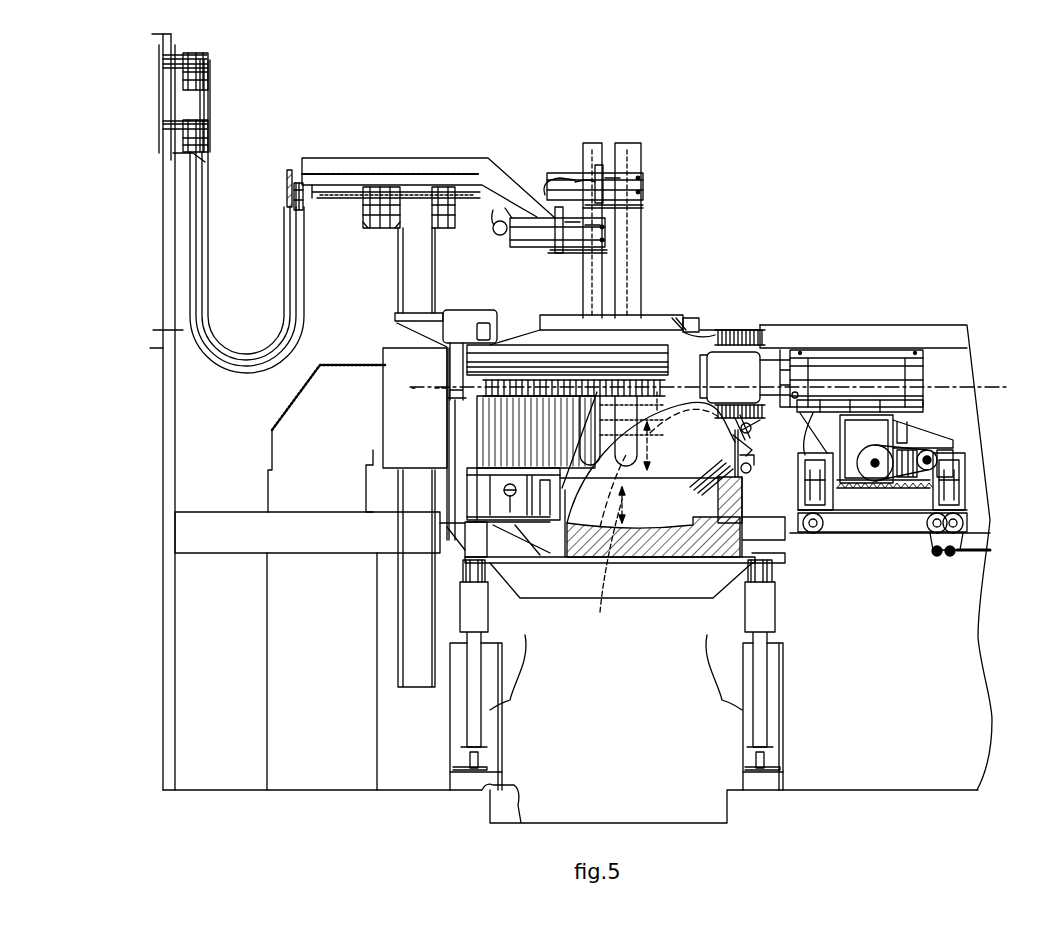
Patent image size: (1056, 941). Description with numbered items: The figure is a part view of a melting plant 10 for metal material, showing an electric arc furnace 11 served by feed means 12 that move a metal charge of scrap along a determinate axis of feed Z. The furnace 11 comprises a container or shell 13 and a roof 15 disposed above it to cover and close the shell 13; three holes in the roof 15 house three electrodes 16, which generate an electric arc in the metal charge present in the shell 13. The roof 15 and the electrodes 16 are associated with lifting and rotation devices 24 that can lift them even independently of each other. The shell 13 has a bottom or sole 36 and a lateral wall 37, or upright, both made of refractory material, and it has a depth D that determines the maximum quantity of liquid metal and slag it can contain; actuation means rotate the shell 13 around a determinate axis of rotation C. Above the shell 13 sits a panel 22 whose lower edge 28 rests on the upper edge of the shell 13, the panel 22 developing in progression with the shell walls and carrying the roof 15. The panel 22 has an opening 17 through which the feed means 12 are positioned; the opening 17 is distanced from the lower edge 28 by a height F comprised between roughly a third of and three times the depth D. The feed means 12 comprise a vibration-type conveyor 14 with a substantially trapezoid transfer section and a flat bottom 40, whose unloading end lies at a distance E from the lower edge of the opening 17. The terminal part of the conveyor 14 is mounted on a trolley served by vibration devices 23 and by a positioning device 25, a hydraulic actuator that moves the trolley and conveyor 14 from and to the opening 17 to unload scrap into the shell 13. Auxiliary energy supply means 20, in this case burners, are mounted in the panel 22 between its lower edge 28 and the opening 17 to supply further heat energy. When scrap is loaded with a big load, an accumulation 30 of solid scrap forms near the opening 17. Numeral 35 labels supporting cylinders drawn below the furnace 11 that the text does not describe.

The melting plant 10 is at (848, 160).
The electric arc furnace 11 is at (683, 300).
The feed means 12 is at (885, 345).
The shell 13 is at (643, 548).
The conveyor 14 is at (833, 370).
The roof 15 is at (536, 340).
The electrodes 16 is at (628, 150).
The opening 17 is at (765, 340).
The auxiliary energy supply means 20 is at (790, 507).
The panel 22 is at (490, 400).
The vibration devices 23 is at (960, 458).
The lifting and rotation devices 24 is at (383, 330).
The positioning device 25 is at (985, 550).
The lower edge 28 is at (470, 480).
The accumulation 30 is at (695, 430).
The hydraulic cylinders 35 is at (472, 695).
The sole 36 is at (668, 540).
The lateral wall 37 is at (765, 523).
The flat bottom 40 is at (733, 423).
The axis of rotation C is at (432, 388).
The depth D is at (605, 569).
The distance E is at (657, 413).
The height F is at (638, 472).
The axis of feed Z is at (998, 385).